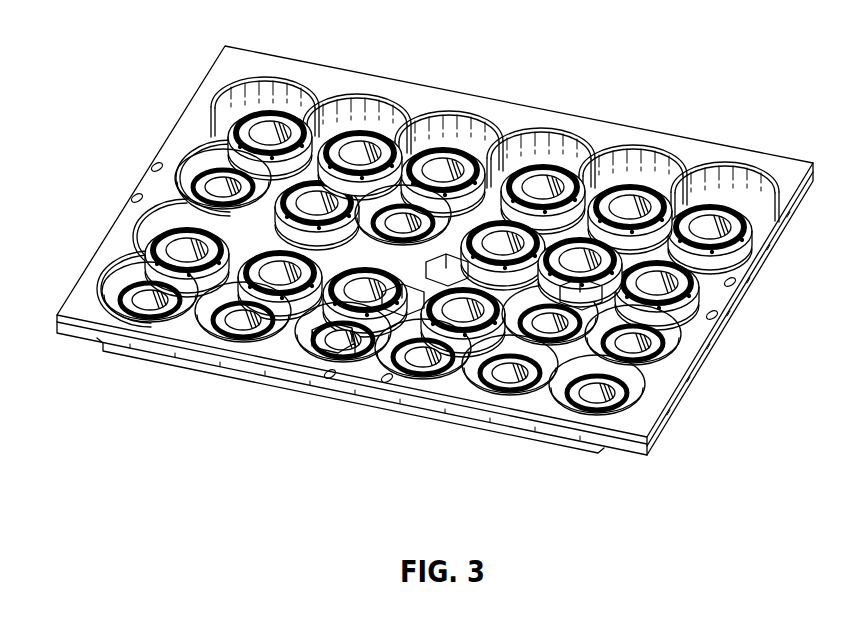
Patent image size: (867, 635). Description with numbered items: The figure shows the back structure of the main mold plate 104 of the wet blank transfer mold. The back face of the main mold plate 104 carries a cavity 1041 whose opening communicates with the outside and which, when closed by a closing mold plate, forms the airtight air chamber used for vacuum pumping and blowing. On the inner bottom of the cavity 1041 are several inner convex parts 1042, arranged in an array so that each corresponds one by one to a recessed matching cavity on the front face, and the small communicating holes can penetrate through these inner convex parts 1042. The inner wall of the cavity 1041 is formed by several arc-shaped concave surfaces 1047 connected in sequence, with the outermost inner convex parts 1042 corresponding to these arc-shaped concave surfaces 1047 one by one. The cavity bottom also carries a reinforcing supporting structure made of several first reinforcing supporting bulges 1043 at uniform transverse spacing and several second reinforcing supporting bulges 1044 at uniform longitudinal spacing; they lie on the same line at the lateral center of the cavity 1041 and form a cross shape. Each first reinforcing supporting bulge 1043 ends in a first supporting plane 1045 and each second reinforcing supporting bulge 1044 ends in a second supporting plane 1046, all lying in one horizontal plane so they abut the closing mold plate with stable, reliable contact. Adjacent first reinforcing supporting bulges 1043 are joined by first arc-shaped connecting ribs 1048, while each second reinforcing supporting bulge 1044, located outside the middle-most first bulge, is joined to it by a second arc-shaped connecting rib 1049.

The main mold plate 104 is at (287, 353).
The cavity 1041 is at (390, 188).
The inner convex part 1042 is at (620, 227).
The first reinforcing supporting bulge 1043 is at (437, 237).
The second reinforcing supporting bulge 1044 is at (415, 300).
The first supporting plane 1045 is at (607, 277).
The second supporting plane 1046 is at (345, 340).
The arc-shaped concave surface 1047 is at (553, 150).
The first arc-shaped connecting rib 1048 is at (582, 295).
The second arc-shaped connecting rib 1049 is at (443, 280).